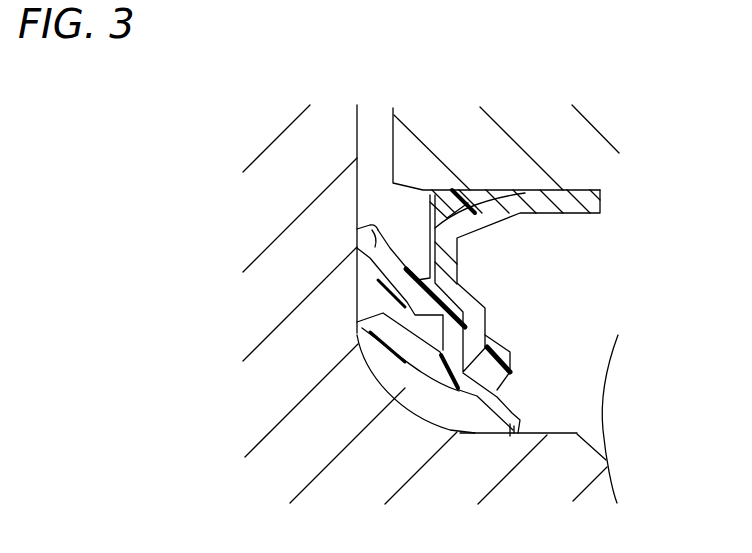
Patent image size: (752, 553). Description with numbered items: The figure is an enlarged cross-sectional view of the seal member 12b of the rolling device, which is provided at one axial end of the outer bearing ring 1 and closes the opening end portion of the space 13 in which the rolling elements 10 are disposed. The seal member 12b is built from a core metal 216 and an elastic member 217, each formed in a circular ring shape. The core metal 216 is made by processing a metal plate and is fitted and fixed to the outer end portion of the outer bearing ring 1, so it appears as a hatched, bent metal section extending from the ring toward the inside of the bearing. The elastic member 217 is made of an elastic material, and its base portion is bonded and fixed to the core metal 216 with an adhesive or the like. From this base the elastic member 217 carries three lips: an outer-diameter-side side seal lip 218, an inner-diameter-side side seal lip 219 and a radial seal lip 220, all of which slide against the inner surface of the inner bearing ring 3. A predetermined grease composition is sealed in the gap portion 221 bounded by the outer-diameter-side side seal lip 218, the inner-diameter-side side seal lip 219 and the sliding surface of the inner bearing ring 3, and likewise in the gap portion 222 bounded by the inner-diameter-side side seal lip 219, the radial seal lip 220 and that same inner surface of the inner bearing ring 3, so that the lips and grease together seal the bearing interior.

The outer bearing ring 1 is at (560, 147).
The inner bearing ring 3 is at (468, 467).
The rolling elements 10 is at (605, 401).
The seal member 12b is at (492, 258).
The space 13 is at (563, 385).
The core metal 216 is at (604, 203).
The elastic member 217 is at (509, 352).
The outer-diameter-side side seal lip 218 is at (365, 230).
The inner-diameter-side side seal lip 219 is at (358, 332).
The radial seal lip 220 is at (510, 425).
The gap portion 221 is at (378, 299).
The gap portion 222 is at (423, 402).